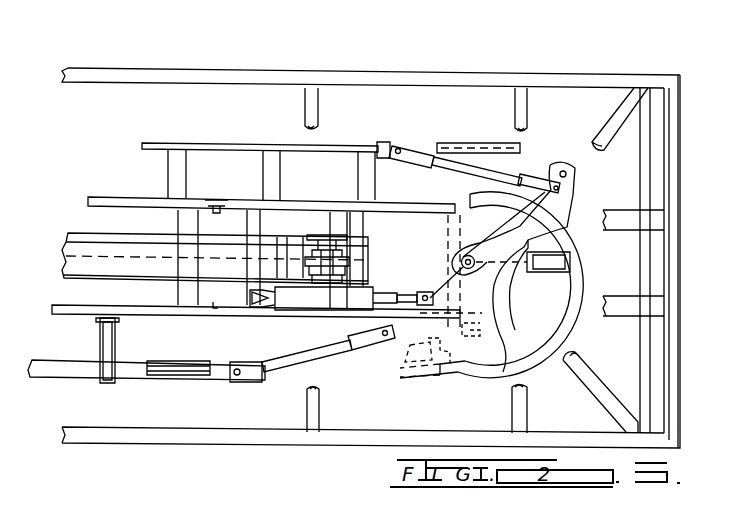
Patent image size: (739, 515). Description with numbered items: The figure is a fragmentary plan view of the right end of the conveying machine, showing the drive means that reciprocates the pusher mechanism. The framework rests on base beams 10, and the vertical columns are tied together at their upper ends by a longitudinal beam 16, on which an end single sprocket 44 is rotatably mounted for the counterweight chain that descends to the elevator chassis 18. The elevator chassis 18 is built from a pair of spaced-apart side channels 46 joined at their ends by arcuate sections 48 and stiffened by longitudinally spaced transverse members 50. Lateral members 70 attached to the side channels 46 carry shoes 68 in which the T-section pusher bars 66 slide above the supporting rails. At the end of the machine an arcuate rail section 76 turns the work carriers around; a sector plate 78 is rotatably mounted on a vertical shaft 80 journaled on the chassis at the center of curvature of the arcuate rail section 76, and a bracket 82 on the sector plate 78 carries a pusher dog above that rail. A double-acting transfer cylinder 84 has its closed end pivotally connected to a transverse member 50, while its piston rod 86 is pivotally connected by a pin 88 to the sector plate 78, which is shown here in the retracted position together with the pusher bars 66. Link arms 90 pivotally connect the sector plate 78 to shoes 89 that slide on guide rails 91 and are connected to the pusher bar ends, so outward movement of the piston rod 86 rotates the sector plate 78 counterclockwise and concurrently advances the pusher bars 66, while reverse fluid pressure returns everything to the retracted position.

The base beams 10 is at (378, 74).
The longitudinal beam 16 is at (82, 245).
The elevator chassis 18 is at (112, 168).
The end single sprocket 44 is at (349, 258).
The side channels 46 is at (150, 207).
The arcuate sections 48 is at (528, 290).
The transverse members 50 is at (183, 290).
The pusher bars 66 is at (46, 378).
The shoes 68 is at (108, 385).
The lateral members 70 is at (117, 343).
The arcuate rail sections 76 is at (574, 330).
The sector plate 78 is at (490, 343).
The vertical shaft 80 is at (463, 257).
The bracket 82 is at (447, 387).
The transfer cylinder 84 is at (308, 302).
The piston rod 86 is at (410, 292).
The pin 88 is at (424, 296).
The shoe 89 is at (388, 145).
The link arms 90 is at (458, 170).
The guide rail 91 is at (190, 378).